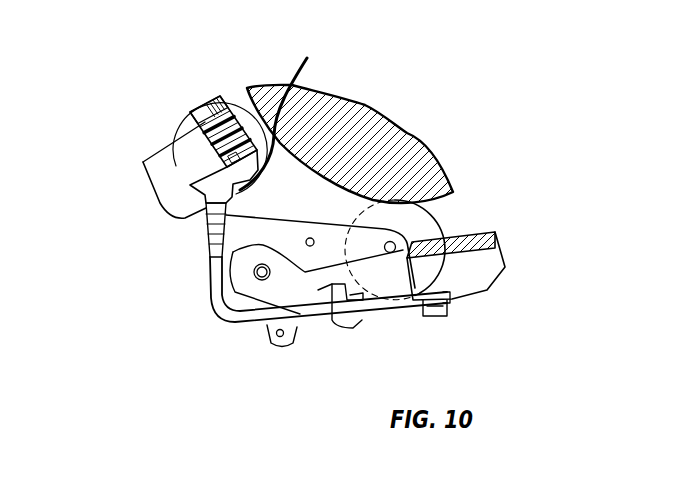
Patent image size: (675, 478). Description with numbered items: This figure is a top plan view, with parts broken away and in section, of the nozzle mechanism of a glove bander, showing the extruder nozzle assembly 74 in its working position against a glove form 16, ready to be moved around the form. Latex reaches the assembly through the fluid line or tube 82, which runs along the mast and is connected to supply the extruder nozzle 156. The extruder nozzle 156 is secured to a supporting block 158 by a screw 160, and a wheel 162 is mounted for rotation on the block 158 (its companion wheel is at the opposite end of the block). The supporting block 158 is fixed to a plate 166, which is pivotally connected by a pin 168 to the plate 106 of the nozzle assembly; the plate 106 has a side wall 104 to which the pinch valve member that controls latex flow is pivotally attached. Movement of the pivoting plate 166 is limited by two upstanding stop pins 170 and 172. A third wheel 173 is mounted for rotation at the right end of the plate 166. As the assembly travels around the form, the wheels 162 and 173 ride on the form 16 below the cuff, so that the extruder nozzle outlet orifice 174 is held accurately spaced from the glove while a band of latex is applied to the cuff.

The glove form 16 is at (407, 133).
The extruder nozzle assembly 74 is at (131, 284).
The fluid line or tube 82 is at (218, 318).
The side wall 104 is at (495, 233).
The plate 106 is at (487, 290).
The extruder nozzle 156 is at (273, 172).
The supporting block 158 is at (195, 130).
The screw 160 is at (200, 110).
The wheel 162 is at (244, 122).
The plate 166 is at (182, 218).
The pin 168 is at (253, 276).
The stop pin 170 is at (283, 347).
The stop pin 172 is at (310, 238).
The third wheel 173 is at (437, 225).
The extruder nozzle outlet orifice 174 is at (283, 109).